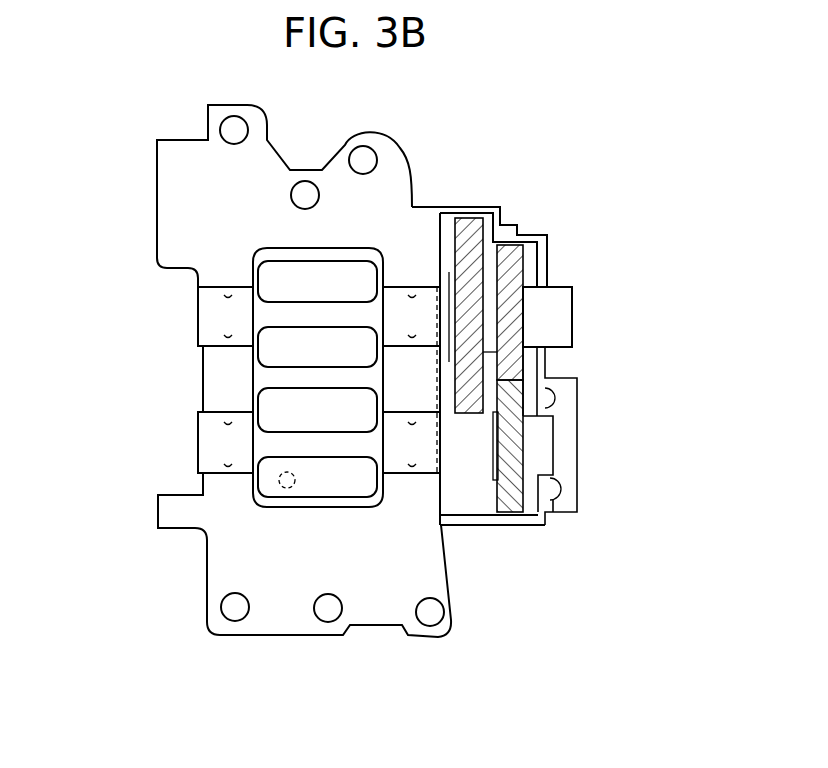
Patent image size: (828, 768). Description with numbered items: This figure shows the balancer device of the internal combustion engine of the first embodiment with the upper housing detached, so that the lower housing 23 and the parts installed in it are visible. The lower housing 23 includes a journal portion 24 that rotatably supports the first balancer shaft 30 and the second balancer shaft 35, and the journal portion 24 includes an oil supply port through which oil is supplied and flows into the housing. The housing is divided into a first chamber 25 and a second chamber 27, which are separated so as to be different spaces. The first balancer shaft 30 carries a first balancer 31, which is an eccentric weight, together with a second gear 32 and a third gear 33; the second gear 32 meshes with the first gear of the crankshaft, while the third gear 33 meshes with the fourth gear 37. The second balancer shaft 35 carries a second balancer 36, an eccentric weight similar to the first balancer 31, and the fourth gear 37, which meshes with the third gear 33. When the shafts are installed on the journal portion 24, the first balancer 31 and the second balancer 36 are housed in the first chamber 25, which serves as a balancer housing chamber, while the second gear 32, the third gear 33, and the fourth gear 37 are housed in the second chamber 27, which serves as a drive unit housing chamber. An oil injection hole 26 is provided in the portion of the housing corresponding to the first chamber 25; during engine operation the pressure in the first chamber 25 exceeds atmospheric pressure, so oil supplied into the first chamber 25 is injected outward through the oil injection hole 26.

The lower housing 23 is at (205, 575).
The journal portion 24 is at (396, 283).
The first chamber 25 is at (326, 270).
The oil injection hole 26 is at (281, 478).
The second chamber 27 is at (440, 232).
The first balancer shaft 30 is at (228, 280).
The first balancer 31 is at (297, 267).
The second gear 32 is at (483, 206).
The third gear 33 is at (548, 233).
The second balancer shaft 35 is at (221, 484).
The second balancer 36 is at (345, 500).
The fourth gear 37 is at (545, 522).